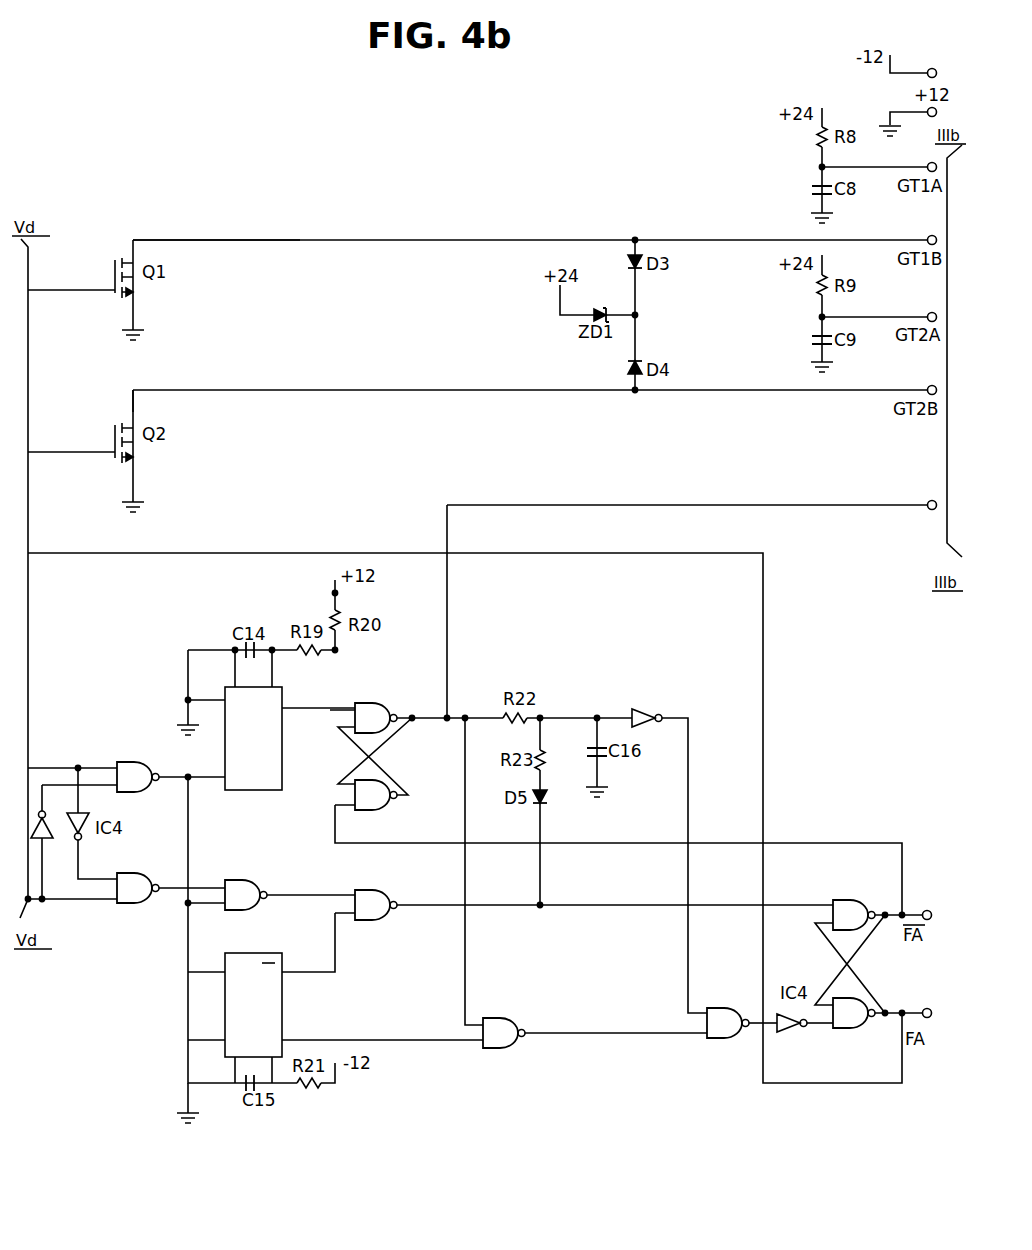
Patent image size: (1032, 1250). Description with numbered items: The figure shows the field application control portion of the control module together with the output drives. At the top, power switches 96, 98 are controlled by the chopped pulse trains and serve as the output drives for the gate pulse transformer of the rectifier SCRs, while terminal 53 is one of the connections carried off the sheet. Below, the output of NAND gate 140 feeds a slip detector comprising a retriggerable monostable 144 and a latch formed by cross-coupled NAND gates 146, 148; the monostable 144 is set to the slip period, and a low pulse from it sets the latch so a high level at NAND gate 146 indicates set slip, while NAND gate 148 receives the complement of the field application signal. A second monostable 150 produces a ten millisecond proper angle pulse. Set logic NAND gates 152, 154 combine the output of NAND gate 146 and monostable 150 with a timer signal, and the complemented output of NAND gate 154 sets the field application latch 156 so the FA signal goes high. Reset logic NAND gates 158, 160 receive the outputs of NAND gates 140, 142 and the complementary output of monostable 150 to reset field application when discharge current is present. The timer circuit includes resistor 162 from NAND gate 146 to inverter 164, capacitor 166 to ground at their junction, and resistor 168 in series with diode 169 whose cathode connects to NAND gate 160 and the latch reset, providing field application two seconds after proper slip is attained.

The power switch 96 is at (140, 240).
The power switch 98 is at (133, 412).
The terminal 53 is at (692, 518).
The NAND gate 140 is at (135, 791).
The NAND gate 142 is at (122, 903).
The monostable 144 is at (282, 768).
The NAND gate 146 is at (394, 709).
The NAND gate 148 is at (392, 802).
The monostable 150 is at (282, 1000).
The NAND gate 152 is at (512, 1050).
The NAND gate 154 is at (720, 1040).
The field application latch 156 is at (852, 963).
The NAND gate 158 is at (258, 905).
The NAND gate 160 is at (388, 918).
The resistor 162 is at (497, 712).
The inverter 164 is at (630, 712).
The capacitor 166 is at (605, 760).
The resistor 168 is at (547, 764).
The diode 169 is at (545, 806).